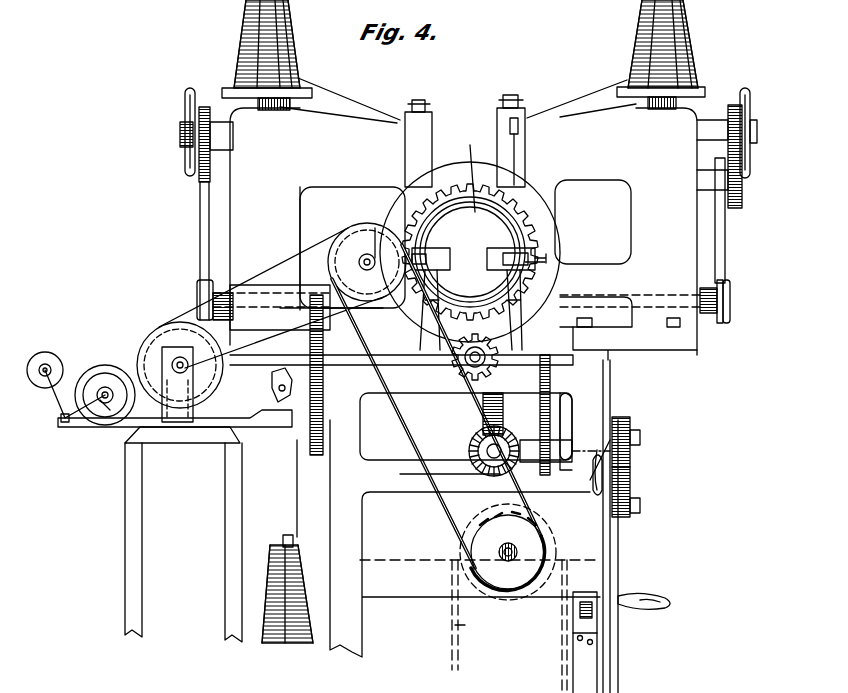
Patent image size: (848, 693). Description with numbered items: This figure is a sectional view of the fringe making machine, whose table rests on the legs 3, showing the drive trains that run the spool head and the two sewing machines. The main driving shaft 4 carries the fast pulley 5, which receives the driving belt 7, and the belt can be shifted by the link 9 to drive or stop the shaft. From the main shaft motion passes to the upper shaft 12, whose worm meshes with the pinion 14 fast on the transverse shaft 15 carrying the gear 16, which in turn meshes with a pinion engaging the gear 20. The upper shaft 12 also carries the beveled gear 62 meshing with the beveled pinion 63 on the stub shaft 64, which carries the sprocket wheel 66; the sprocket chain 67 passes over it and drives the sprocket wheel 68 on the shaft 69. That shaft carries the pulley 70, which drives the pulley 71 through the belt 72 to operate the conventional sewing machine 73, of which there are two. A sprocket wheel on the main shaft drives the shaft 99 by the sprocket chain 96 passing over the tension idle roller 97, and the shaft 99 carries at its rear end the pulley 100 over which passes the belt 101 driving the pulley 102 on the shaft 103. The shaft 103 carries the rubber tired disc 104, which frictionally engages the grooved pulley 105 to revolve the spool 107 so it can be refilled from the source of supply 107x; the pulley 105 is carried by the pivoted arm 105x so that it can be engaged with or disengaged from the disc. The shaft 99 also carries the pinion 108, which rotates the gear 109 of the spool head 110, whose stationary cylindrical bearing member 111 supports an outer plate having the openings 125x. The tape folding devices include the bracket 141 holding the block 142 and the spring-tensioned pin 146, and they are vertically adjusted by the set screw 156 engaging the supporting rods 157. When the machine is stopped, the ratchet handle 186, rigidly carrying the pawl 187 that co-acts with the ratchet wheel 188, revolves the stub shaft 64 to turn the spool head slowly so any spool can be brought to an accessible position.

The legs 3 is at (605, 538).
The main driving shaft 4 is at (480, 598).
The fast pulley 5 is at (510, 596).
The driving belt 7 is at (465, 635).
The link 9 is at (590, 605).
The upper shaft 12 is at (470, 460).
The pinion 14 is at (478, 402).
The transverse shaft 15 is at (380, 402).
The gear 16 is at (293, 445).
The gear 20 is at (305, 262).
The beveled gear 62 is at (468, 447).
The beveled pinion 63 is at (500, 488).
The stub shaft 64 is at (580, 445).
The sprocket wheel 66 is at (568, 408).
The sprocket chain 67 is at (585, 378).
The sprocket wheel 68 is at (545, 305).
The shaft 69 is at (228, 292).
The pulley 70 is at (197, 295).
The pulley 71 is at (195, 150).
The belt 72 is at (205, 197).
The sewing machine 73 is at (373, 230).
The sprocket chain 96 is at (420, 478).
The tension idle roller 97 is at (460, 368).
The shaft 99 is at (360, 245).
The pulley 100 is at (335, 245).
The belt 101 is at (290, 305).
The pulley 102 is at (172, 360).
The shaft 103 is at (186, 378).
The rubber tired disc 104 is at (160, 340).
The grooved pulley 105 is at (105, 365).
The pivoted arm 105x is at (55, 418).
The spool 107 is at (104, 412).
The source of supply 107x is at (278, 585).
The pinion 108 is at (375, 228).
The gear 109 is at (524, 203).
The spool head 110 is at (530, 255).
The stationary cylindrical bearing member 111 is at (520, 190).
The openings 125x is at (470, 166).
The bracket 141 is at (528, 262).
The block 142 is at (432, 258).
The pin 146 is at (432, 234).
The set screw 156 is at (510, 296).
The supporting rods 157 is at (430, 265).
The ratchet handle 186 is at (672, 590).
The pawl 187 is at (633, 495).
The ratchet wheel 188 is at (632, 440).